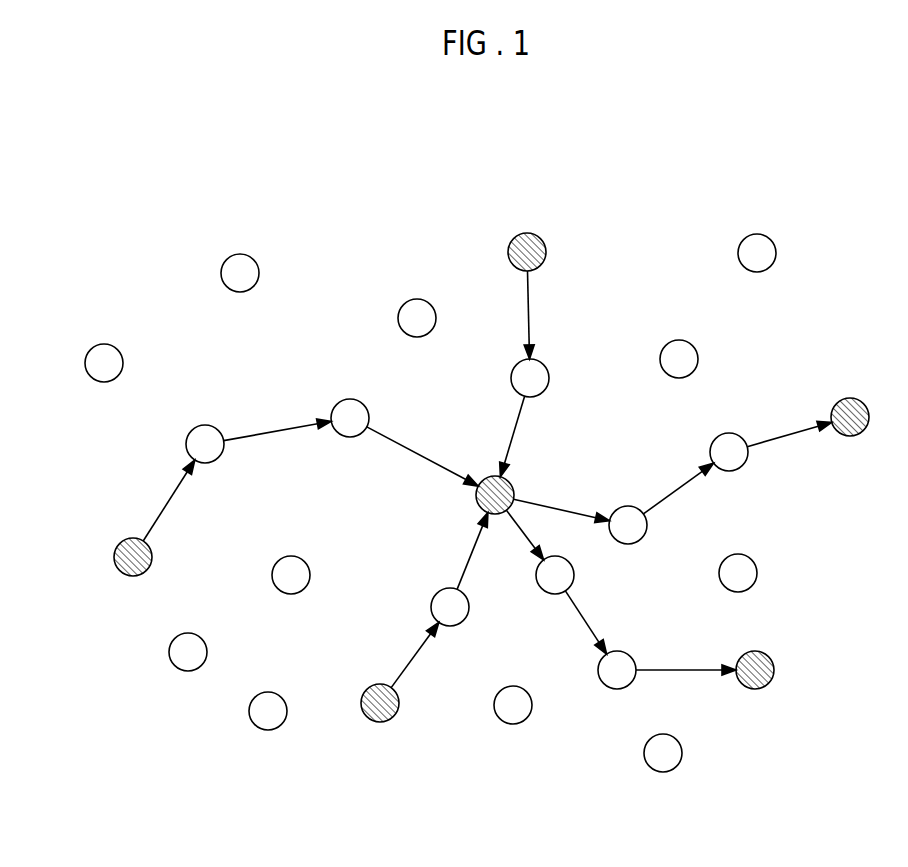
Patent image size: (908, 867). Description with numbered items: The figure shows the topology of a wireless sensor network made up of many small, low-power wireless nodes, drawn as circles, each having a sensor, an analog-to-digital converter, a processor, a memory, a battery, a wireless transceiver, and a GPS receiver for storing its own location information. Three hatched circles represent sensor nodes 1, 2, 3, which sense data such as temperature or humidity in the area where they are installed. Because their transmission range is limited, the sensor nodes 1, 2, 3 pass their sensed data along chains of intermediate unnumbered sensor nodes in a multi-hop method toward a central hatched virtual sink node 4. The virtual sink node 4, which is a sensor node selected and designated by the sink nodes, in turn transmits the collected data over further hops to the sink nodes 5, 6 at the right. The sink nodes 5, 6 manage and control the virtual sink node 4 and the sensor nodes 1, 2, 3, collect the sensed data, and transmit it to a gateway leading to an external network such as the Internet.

The sensor node 1 is at (378, 722).
The sensor node 2 is at (118, 576).
The sensor node 3 is at (527, 233).
The virtual sink node 4 is at (512, 487).
The sink node 5 is at (847, 436).
The sink node 6 is at (753, 690).